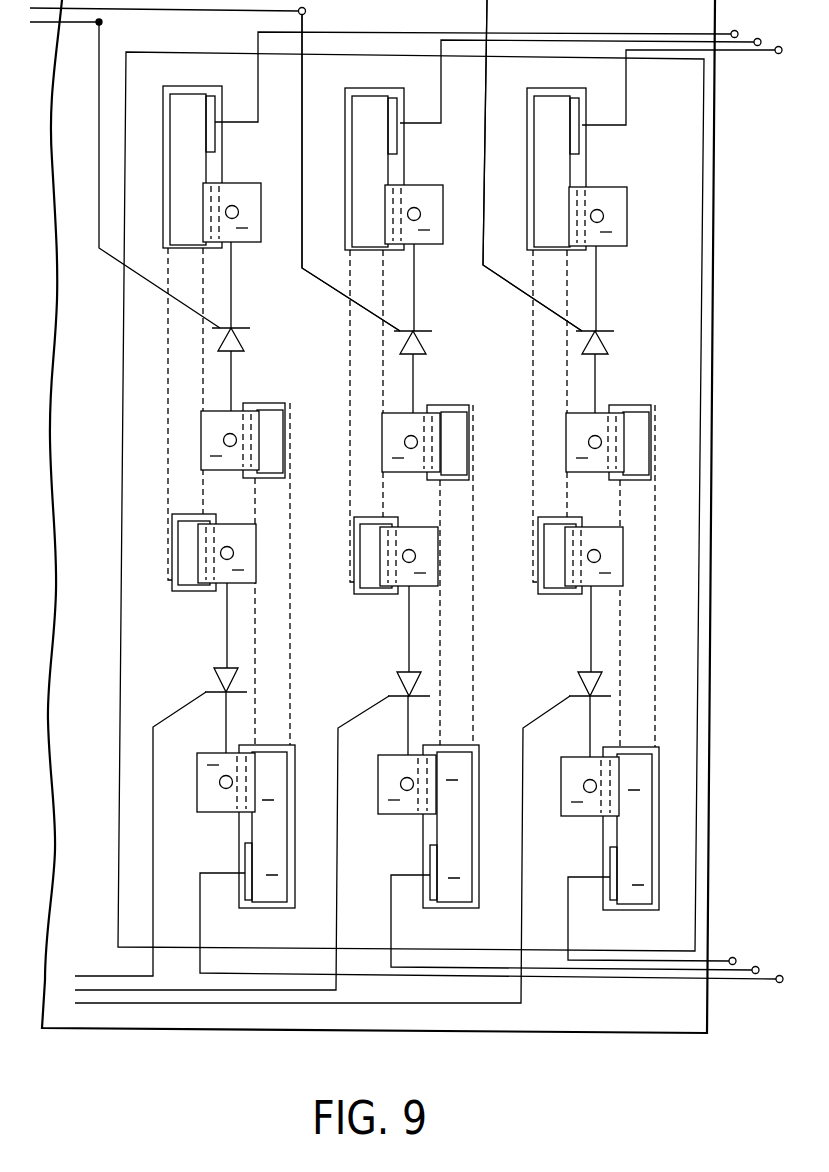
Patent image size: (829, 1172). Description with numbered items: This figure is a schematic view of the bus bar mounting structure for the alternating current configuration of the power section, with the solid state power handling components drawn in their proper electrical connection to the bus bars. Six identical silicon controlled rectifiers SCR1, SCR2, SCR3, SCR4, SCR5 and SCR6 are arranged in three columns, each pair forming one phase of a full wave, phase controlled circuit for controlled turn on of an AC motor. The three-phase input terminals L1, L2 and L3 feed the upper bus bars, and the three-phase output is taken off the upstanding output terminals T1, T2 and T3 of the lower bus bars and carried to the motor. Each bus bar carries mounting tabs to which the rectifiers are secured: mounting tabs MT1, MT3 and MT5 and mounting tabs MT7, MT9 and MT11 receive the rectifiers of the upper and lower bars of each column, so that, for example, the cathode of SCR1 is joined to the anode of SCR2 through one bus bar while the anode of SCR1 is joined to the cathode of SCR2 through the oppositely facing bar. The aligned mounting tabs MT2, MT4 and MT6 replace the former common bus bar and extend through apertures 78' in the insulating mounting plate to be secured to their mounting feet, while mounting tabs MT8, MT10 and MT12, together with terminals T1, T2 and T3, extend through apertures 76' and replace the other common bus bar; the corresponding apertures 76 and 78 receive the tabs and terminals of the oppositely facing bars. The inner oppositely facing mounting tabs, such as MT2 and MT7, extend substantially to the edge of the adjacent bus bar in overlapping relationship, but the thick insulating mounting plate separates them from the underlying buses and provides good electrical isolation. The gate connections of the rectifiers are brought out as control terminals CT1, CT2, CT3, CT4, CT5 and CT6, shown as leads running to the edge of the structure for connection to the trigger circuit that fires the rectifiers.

The aperture 76 is at (375, 154).
The aperture 76' is at (459, 845).
The aperture 78 is at (377, 575).
The aperture 78' is at (458, 428).
The input terminal L1 is at (215, 142).
The input terminal L2 is at (400, 143).
The input terminal L3 is at (582, 147).
The mounting tab MT1 is at (250, 242).
The mounting tab MT2 is at (213, 469).
The mounting tab MT3 is at (433, 244).
The mounting tab MT4 is at (398, 472).
The mounting tab MT5 is at (618, 244).
The mounting tab MT6 is at (583, 472).
The mounting tab MT7 is at (256, 557).
The mounting tab MT8 is at (218, 812).
The mounting tab MT9 is at (440, 562).
The mounting tab MT10 is at (400, 814).
The mounting tab MT11 is at (622, 562).
The mounting tab MT12 is at (585, 816).
The control terminal CT1 is at (182, 708).
The control terminal CT2 is at (212, 291).
The control terminal CT3 is at (373, 713).
The control terminal CT4 is at (398, 292).
The control terminal CT5 is at (560, 712).
The control terminal CT6 is at (562, 313).
The silicon controlled rectifier SCR1 is at (243, 680).
The silicon controlled rectifier SCR2 is at (260, 369).
The silicon controlled rectifier SCR3 is at (424, 683).
The silicon controlled rectifier SCR4 is at (446, 372).
The silicon controlled rectifier SCR5 is at (605, 683).
The silicon controlled rectifier SCR6 is at (623, 372).
The output terminal T1 is at (247, 890).
The output terminal T2 is at (431, 892).
The output terminal T3 is at (612, 892).